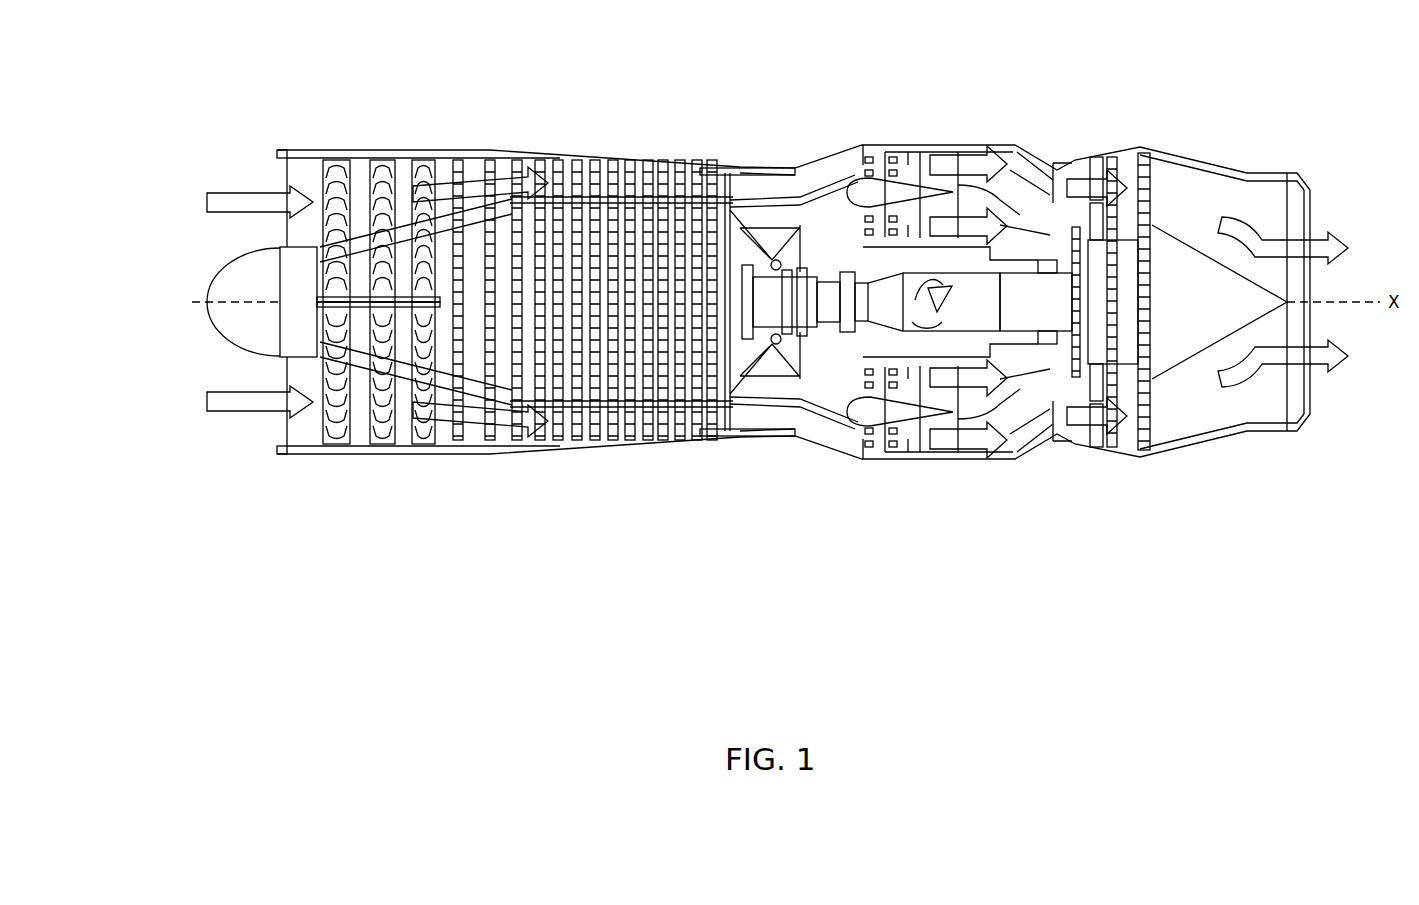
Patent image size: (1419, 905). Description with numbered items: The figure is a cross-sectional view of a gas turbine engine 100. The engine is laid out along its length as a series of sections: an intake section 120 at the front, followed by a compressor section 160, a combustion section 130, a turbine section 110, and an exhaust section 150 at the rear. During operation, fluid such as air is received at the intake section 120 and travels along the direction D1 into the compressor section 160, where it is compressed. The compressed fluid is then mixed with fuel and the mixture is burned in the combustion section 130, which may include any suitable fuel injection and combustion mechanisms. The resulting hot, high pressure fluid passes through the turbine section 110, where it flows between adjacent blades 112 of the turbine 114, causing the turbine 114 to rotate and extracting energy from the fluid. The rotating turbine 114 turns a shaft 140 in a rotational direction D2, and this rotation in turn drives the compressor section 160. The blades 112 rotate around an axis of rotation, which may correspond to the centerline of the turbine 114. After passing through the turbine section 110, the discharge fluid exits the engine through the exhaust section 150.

The gas turbine engine 100 is at (833, 520).
The turbine section 110 is at (1122, 150).
The blades 112 is at (1153, 267).
The turbine 114 is at (1177, 317).
The intake section 120 is at (262, 438).
The combustion section 130 is at (1017, 178).
The shaft 140 is at (977, 303).
The exhaust section 150 is at (1306, 216).
The compressor section 160 is at (565, 160).
The direction D1 is at (223, 203).
The rotational direction D2 is at (905, 240).